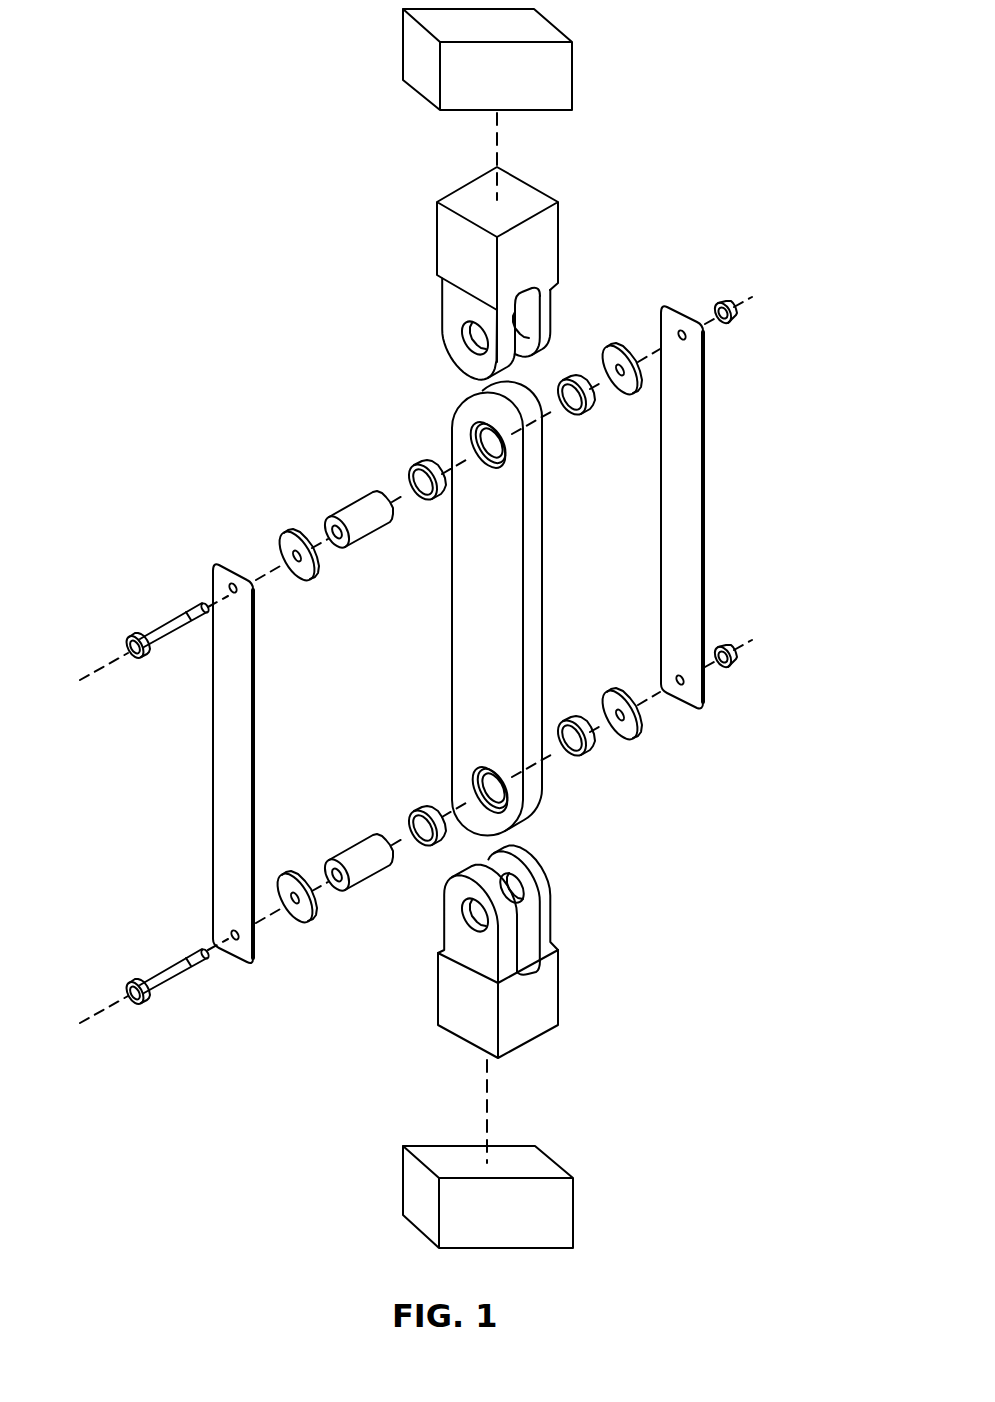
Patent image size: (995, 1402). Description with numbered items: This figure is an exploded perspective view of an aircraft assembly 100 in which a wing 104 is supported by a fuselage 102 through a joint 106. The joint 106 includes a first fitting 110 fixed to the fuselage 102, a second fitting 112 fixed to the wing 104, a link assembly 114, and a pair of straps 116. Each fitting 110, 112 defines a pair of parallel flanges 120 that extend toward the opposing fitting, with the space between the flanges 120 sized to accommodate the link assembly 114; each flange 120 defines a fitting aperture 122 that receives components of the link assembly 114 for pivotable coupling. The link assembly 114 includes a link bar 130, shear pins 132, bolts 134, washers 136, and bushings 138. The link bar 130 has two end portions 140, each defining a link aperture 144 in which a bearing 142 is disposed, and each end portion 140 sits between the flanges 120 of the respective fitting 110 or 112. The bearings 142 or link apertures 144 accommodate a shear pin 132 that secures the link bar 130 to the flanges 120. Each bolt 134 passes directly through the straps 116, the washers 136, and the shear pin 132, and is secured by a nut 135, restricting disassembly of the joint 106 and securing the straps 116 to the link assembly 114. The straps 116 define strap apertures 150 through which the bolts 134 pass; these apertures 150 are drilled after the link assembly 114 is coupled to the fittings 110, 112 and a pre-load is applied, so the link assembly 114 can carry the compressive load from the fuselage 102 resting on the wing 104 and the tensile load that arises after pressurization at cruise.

The aircraft assembly 100 is at (164, 210).
The fuselage 102 is at (576, 77).
The wing 104 is at (576, 1214).
The joint 106 is at (676, 192).
The first fitting 110 is at (436, 250).
The second fitting 112 is at (434, 1007).
The link assembly 114 is at (565, 775).
The straps 116 is at (705, 404).
The flanges 120 is at (440, 303).
The fitting aperture 122 is at (468, 339).
The link bar 130 is at (450, 408).
The shear pins 132 is at (339, 505).
The bolts 134 is at (163, 615).
The nut 135 is at (738, 292).
The washers 136 is at (626, 352).
The bushings 138 is at (404, 467).
The end portions 140 is at (538, 490).
The bearing 142 is at (493, 426).
The link aperture 144 is at (486, 470).
The strap apertures 150 is at (685, 330).